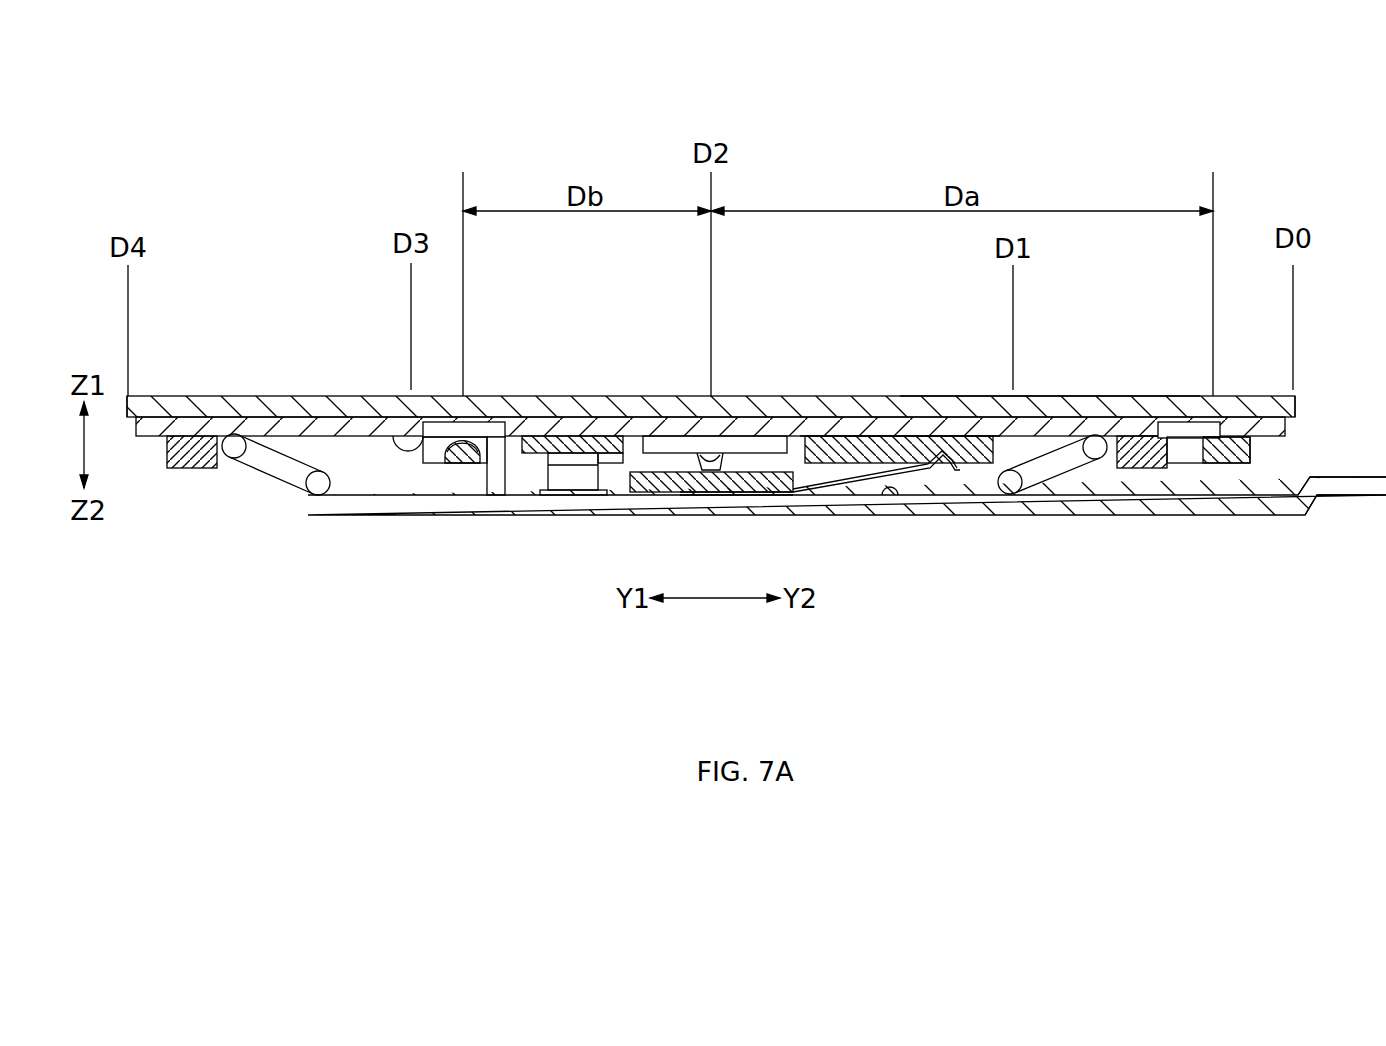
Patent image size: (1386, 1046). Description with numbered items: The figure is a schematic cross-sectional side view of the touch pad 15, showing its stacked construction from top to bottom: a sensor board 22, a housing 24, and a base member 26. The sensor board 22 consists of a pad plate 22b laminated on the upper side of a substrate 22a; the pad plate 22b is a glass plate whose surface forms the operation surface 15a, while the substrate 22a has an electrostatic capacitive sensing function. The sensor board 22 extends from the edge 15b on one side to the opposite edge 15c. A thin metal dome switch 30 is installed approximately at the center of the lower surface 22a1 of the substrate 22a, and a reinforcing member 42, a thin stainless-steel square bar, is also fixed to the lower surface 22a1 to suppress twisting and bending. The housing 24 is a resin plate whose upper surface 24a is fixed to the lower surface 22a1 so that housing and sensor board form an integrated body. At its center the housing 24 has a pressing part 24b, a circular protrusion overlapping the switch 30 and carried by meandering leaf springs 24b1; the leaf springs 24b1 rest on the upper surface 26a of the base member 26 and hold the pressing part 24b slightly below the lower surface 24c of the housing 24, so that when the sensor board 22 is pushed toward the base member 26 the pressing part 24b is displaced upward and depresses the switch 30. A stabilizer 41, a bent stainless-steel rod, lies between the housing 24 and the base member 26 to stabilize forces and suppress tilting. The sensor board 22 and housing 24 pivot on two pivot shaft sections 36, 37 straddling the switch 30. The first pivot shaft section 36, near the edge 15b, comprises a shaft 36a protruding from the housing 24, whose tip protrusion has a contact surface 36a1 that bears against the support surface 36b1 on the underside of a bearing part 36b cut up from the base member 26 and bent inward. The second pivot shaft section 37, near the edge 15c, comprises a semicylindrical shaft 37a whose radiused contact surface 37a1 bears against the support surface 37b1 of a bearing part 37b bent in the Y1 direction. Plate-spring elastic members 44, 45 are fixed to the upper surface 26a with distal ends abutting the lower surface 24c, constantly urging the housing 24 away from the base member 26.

The touch pad 15 is at (123, 169).
The operation surface 15a is at (1048, 396).
The edge 15b is at (1298, 405).
The edge 15c is at (127, 407).
The sensor board 22 is at (711, 356).
The substrate 22a is at (252, 417).
The pad plate 22b is at (207, 320).
The lower surface 22a1 is at (668, 440).
The housing 24 is at (761, 450).
The upper surface 24a is at (867, 433).
The pressing part 24b is at (707, 476).
The leaf spring 24b1 is at (777, 482).
The lower surface 24c is at (604, 448).
The base member 26 is at (528, 510).
The upper surface 26a is at (895, 500).
The switch 30 is at (707, 458).
The pivot shaft section 36 is at (1196, 477).
The shaft 36a is at (1230, 463).
The contact surface 36a1 is at (1213, 438).
The bearing part 36b is at (1185, 445).
The support surface 36b1 is at (1148, 435).
The pivot shaft section 37 is at (437, 469).
The shaft 37a is at (463, 450).
The contact surface 37a1 is at (452, 446).
The bearing part 37b is at (435, 440).
The support surface 37b1 is at (405, 432).
The stabilizer 41 is at (273, 466).
The reinforcing member 42 is at (193, 468).
The elastic member 44 is at (937, 478).
The elastic member 45 is at (577, 477).